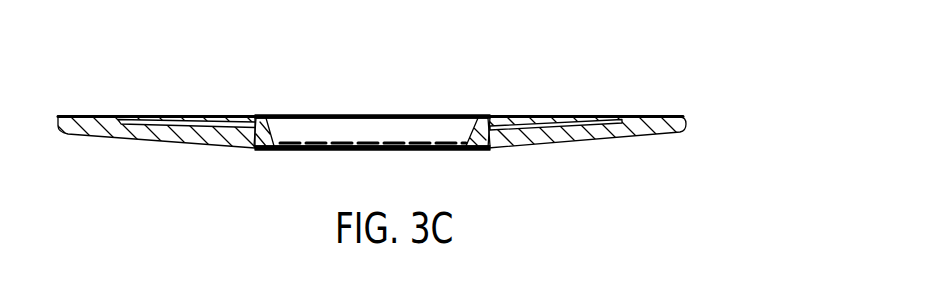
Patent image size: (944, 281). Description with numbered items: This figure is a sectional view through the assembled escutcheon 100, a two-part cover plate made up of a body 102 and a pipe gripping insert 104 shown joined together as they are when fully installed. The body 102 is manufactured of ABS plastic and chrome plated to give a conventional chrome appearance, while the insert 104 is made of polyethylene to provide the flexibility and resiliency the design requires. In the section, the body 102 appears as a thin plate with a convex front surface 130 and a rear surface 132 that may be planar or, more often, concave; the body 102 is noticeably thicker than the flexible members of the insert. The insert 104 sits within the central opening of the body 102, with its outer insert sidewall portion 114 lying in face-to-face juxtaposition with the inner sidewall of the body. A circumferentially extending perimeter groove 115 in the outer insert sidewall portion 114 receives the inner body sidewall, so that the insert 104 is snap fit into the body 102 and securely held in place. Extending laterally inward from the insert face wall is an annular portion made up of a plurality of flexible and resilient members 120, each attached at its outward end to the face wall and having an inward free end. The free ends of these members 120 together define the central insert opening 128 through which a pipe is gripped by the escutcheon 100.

The escutcheon 100 is at (710, 64).
The body 102 is at (627, 116).
The insert 104 is at (312, 116).
The outer insert sidewall portion 114 is at (478, 150).
The perimeter groove 115 is at (497, 126).
The flexible and resilient members 120 is at (365, 150).
The central insert opening 128 is at (397, 128).
The front surface 130 is at (580, 141).
The rear surface 132 is at (215, 116).